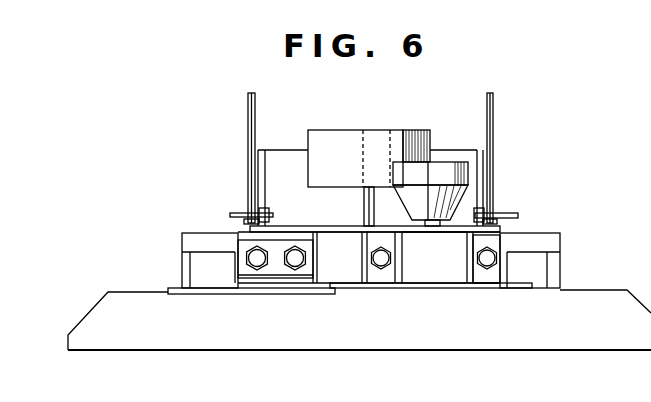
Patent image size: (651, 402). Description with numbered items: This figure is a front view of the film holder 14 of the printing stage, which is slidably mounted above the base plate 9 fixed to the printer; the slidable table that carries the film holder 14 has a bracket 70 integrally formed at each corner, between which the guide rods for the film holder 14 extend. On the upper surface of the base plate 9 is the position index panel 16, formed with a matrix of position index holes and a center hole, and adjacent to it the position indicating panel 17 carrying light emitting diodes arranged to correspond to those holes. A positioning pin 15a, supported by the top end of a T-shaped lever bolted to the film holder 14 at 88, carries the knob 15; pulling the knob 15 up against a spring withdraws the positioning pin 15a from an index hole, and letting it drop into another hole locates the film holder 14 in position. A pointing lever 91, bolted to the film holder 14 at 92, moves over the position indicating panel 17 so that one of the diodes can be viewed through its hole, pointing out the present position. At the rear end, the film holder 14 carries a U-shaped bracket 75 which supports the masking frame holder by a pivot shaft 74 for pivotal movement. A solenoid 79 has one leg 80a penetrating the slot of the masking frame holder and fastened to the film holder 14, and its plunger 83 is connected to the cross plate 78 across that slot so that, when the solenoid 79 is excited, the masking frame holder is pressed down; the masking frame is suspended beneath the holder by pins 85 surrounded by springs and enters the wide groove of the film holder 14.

The base plate 9 is at (128, 302).
The film holder 14 is at (543, 240).
The knob 15 is at (450, 162).
The positioning pin 15a is at (435, 287).
The position index panel 16 is at (407, 290).
The position indicating panel 17 is at (175, 288).
The bracket 70 is at (550, 270).
The pivot shaft 74 is at (497, 213).
The U-shaped bracket 75 is at (297, 160).
The cross plate 78 is at (345, 217).
The solenoid 79 is at (415, 142).
The leg 80a is at (370, 188).
The plunger 83 is at (362, 202).
The pin 85 is at (264, 212).
The bolt 88 is at (488, 262).
The pointing lever 91 is at (250, 278).
The bolt 92 is at (252, 258).